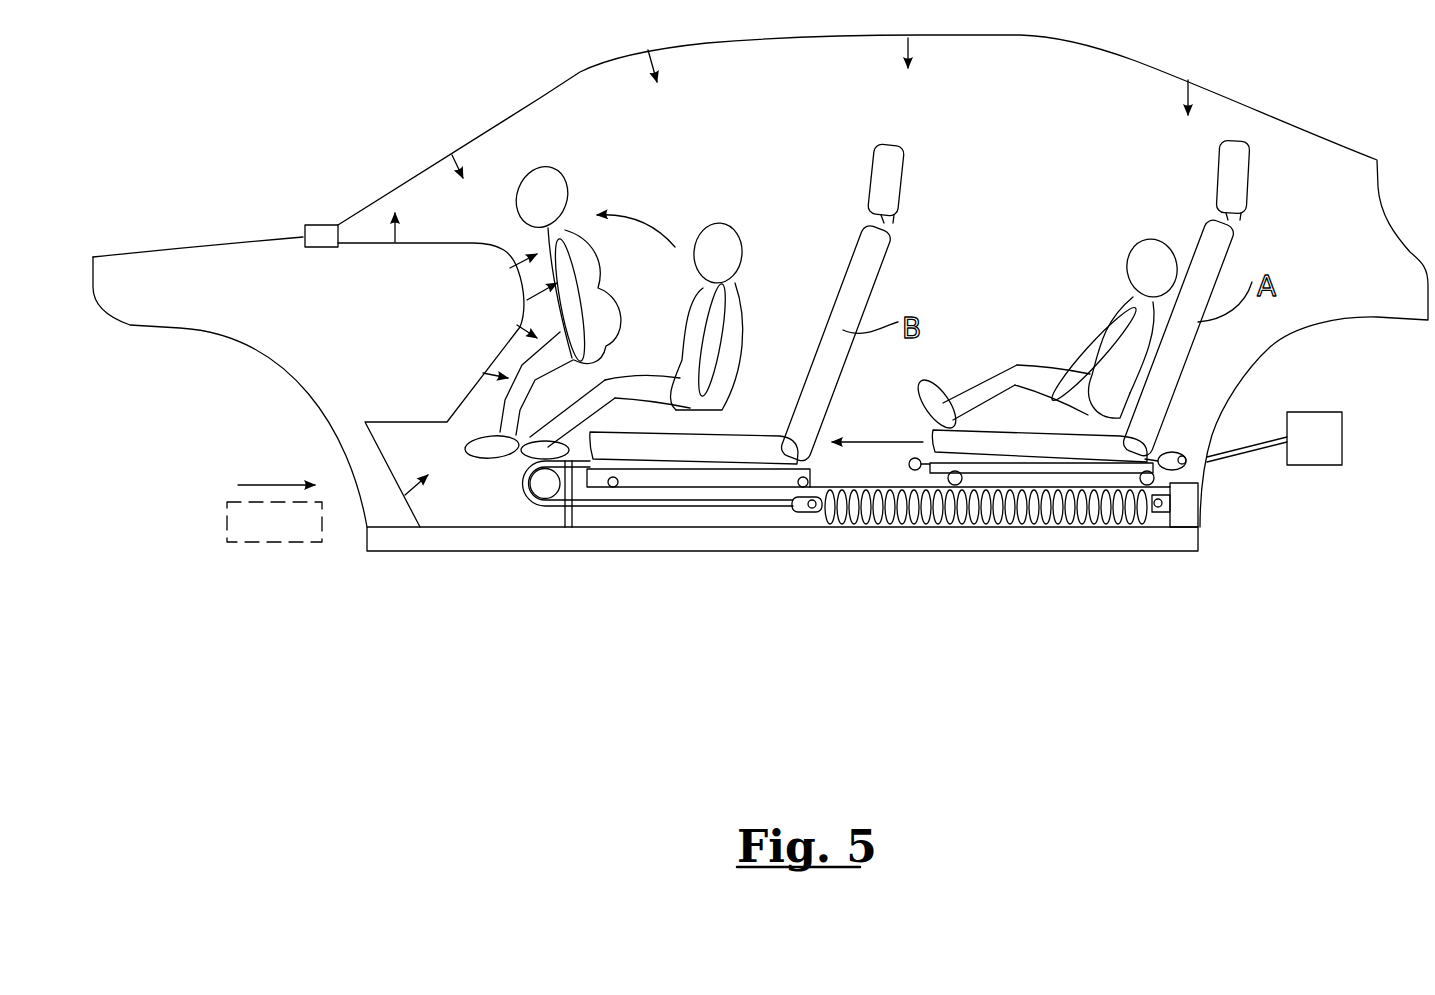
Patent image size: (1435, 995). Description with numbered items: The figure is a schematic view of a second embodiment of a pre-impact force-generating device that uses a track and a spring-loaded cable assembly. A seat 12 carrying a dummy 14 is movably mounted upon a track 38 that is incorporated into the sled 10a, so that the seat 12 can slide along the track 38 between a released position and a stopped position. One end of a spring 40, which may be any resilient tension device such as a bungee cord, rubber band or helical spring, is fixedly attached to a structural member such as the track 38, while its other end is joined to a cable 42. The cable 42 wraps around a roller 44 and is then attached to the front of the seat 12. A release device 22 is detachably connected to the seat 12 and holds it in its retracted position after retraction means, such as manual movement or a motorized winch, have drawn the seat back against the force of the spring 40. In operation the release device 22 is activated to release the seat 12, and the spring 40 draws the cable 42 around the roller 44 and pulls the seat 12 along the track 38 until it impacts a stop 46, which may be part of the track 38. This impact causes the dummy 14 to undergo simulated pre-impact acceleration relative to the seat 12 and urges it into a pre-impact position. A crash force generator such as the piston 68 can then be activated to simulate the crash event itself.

The sled 10a is at (208, 273).
The seat 12 is at (870, 267).
The dummy 14 is at (727, 223).
The release device 22 is at (1318, 465).
The track 38 is at (780, 528).
The spring 40 is at (990, 527).
The cable 42 is at (710, 508).
The roller 44 is at (547, 492).
The stop 46 is at (578, 488).
The piston 68 is at (285, 533).